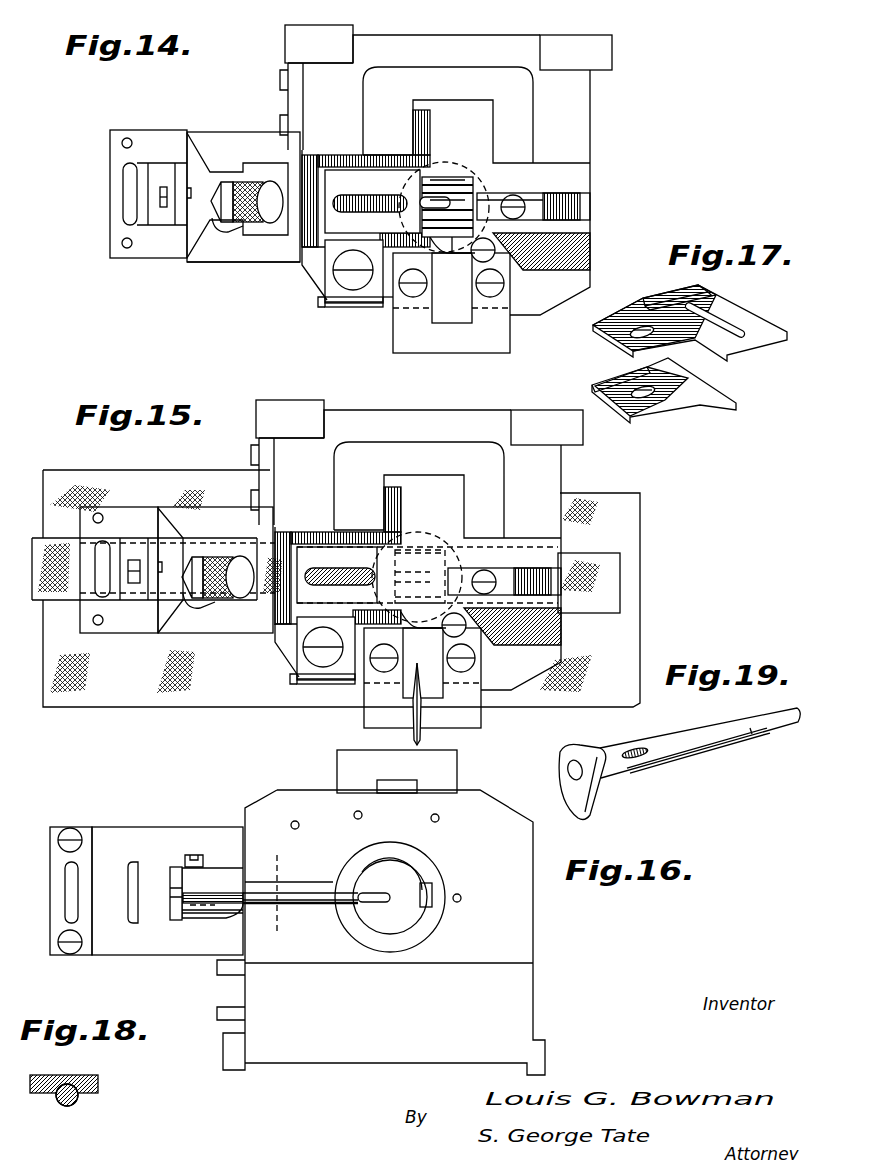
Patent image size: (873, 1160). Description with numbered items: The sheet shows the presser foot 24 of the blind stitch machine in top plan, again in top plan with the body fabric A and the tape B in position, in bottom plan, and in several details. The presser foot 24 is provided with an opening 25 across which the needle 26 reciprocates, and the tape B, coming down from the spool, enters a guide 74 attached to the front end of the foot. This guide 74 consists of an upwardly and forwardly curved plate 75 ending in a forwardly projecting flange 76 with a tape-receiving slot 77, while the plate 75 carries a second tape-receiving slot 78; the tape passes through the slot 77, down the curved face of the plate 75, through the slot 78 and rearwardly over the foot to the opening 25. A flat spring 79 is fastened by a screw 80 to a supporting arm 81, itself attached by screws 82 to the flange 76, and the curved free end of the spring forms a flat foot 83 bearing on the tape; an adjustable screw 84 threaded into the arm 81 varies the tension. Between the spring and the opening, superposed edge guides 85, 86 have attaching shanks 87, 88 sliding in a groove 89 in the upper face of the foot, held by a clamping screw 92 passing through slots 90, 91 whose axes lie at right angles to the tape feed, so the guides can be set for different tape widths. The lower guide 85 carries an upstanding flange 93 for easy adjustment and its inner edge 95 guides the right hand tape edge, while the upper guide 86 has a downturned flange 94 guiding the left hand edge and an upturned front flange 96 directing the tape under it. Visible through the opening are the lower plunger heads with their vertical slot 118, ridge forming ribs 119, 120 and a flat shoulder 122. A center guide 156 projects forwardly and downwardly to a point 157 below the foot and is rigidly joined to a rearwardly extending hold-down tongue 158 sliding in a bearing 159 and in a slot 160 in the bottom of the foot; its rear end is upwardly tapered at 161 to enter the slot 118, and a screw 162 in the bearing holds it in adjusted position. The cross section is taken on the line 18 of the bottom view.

In FIG. 16, the section line 18 is at (276, 895).
In FIG. 14, the presser foot 24 is at (580, 137).
In FIG. 15, the presser foot 24 is at (552, 482).
In FIG. 16, the presser foot 24 is at (502, 812).
In FIG. 18, the presser foot 24 is at (85, 1075).
In FIG. 14, the opening 25 is at (462, 176).
In FIG. 15, the opening 25 is at (432, 548).
In FIG. 16, the opening 25 is at (420, 922).
In FIG. 15, the needle 26 is at (422, 733).
In FIG. 14, the guide 74 is at (190, 263).
In FIG. 15, the guide 74 is at (205, 634).
In FIG. 16, the guide 74 is at (160, 827).
In FIG. 14, the plate 75 is at (222, 129).
In FIG. 15, the plate 75 is at (178, 515).
In FIG. 16, the plate 75 is at (128, 956).
In FIG. 14, the flange 76 is at (118, 166).
In FIG. 15, the flange 76 is at (80, 543).
In FIG. 16, the flange 76 is at (52, 830).
In FIG. 14, the tape-receiving slot 77 is at (128, 194).
In FIG. 15, the tape-receiving slot 77 is at (110, 602).
In FIG. 16, the tape-receiving slot 77 is at (65, 877).
In FIG. 16, the tape-receiving slot 78 is at (128, 870).
In FIG. 14, the flat spring 79 is at (247, 172).
In FIG. 15, the flat spring 79 is at (205, 605).
In FIG. 14, the screw 80 is at (160, 198).
In FIG. 15, the screw 80 is at (138, 586).
In FIG. 14, the supporting arm 81 is at (215, 235).
In FIG. 15, the supporting arm 81 is at (185, 545).
In FIG. 15, the screws 82 is at (100, 516).
In FIG. 16, the screws 82 is at (72, 830).
In FIG. 14, the foot 83 is at (280, 228).
In FIG. 15, the foot 83 is at (250, 605).
In FIG. 14, the adjustable screw 84 is at (270, 194).
In FIG. 15, the adjustable screw 84 is at (240, 560).
In FIG. 14, the edge guide 85 is at (352, 308).
In FIG. 17, the edge guide 85 is at (688, 406).
In FIG. 15, the edge guide 85 is at (338, 685).
In FIG. 14, the edge guide 86 is at (304, 262).
In FIG. 17, the edge guide 86 is at (730, 312).
In FIG. 15, the edge guide 86 is at (318, 530).
In FIG. 16, the edge guide 86 is at (372, 868).
In FIG. 17, the attaching shank 87 is at (650, 412).
In FIG. 17, the attaching shank 88 is at (625, 322).
In FIG. 15, the attaching shank 88 is at (290, 660).
In FIG. 14, the groove 89 is at (312, 288).
In FIG. 15, the groove 89 is at (285, 642).
In FIG. 14, the slot 90 is at (340, 262).
In FIG. 17, the slot 90 is at (636, 388).
In FIG. 15, the slot 90 is at (318, 632).
In FIG. 17, the slot 91 is at (641, 327).
In FIG. 14, the clamping screw 92 is at (330, 302).
In FIG. 15, the clamping screw 92 is at (320, 682).
In FIG. 14, the upstanding flange 93 is at (378, 300).
In FIG. 17, the upstanding flange 93 is at (592, 388).
In FIG. 15, the upstanding flange 93 is at (300, 690).
In FIG. 14, the downturned flange 94 is at (385, 160).
In FIG. 17, the downturned flange 94 is at (788, 343).
In FIG. 15, the downturned flange 94 is at (352, 531).
In FIG. 17, the inner edge 95 is at (715, 397).
In FIG. 14, the upturned flange 96 is at (352, 196).
In FIG. 17, the upturned flange 96 is at (672, 295).
In FIG. 15, the upturned flange 96 is at (303, 546).
In FIG. 14, the vertical slot 118 is at (493, 193).
In FIG. 14, the ridge forming rib 119 is at (452, 223).
In FIG. 14, the ridge forming rib 120 is at (465, 192).
In FIG. 14, the flat horizontal shoulder 122 is at (432, 182).
In FIG. 19, the center guide 156 is at (560, 770).
In FIG. 16, the center guide 156 is at (170, 915).
In FIG. 19, the point 157 is at (586, 820).
In FIG. 16, the point 157 is at (178, 882).
In FIG. 19, the hold-down tongue 158 is at (702, 750).
In FIG. 16, the hold-down tongue 158 is at (300, 892).
In FIG. 18, the hold-down tongue 158 is at (66, 1104).
In FIG. 16, the bearing 159 is at (200, 920).
In FIG. 16, the slot 160 is at (305, 906).
In FIG. 18, the slot 160 is at (60, 1076).
In FIG. 14, the tapered end 161 is at (430, 202).
In FIG. 15, the tapered end 161 is at (392, 560).
In FIG. 19, the tapered end 161 is at (780, 726).
In FIG. 16, the tapered end 161 is at (378, 903).
In FIG. 16, the screw 162 is at (198, 854).
In FIG. 15, the body fabric A is at (628, 518).
In FIG. 15, the tape B is at (622, 575).